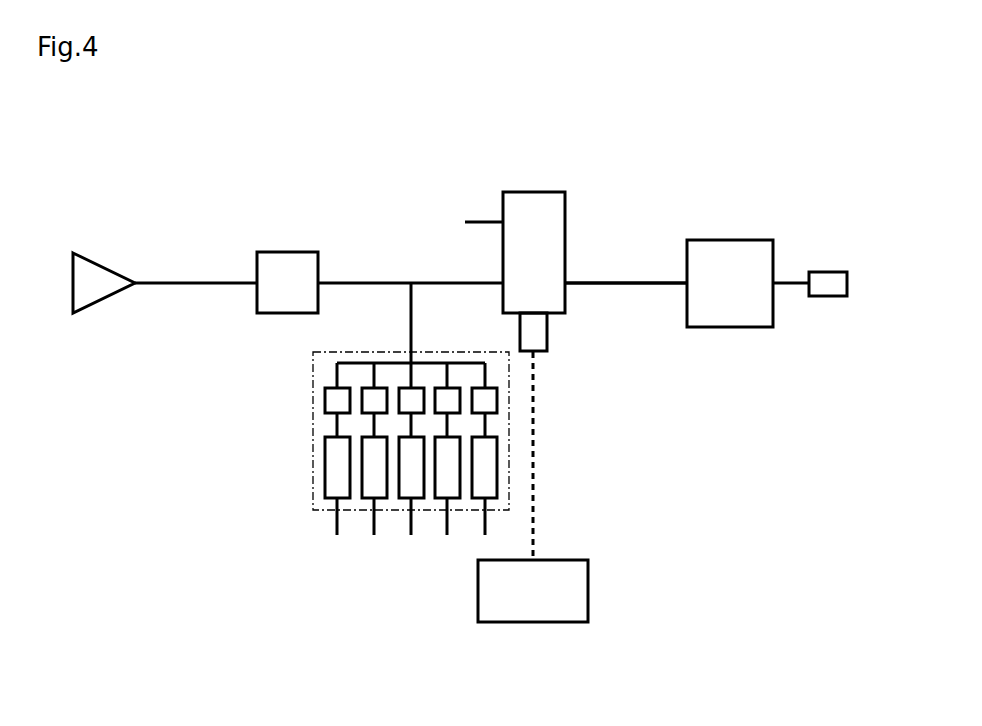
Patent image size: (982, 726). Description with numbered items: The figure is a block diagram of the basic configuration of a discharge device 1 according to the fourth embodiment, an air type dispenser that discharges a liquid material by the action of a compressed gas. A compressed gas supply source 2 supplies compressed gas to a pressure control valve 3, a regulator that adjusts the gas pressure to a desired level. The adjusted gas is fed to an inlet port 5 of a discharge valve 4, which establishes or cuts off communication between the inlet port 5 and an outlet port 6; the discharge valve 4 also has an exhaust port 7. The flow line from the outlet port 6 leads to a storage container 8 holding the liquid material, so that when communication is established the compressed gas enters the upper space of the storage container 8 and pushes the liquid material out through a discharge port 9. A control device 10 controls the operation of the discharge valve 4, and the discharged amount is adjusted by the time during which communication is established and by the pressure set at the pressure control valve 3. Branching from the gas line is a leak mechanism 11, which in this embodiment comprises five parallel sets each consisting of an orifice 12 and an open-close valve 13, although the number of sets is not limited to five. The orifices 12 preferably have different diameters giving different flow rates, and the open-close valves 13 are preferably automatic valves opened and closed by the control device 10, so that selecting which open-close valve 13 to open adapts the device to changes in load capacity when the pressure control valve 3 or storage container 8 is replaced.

The discharge device 1 is at (747, 492).
The compressed gas supply source 2 is at (105, 265).
The pressure control valve 3 is at (287, 252).
The discharge valve 4 is at (533, 190).
The inlet port 5 is at (502, 287).
The outlet port 6 is at (565, 281).
The exhaust port 7 is at (503, 218).
The storage container 8 is at (730, 240).
The discharge port 9 is at (828, 272).
The control device 10 is at (588, 588).
The leak mechanism 11 is at (334, 443).
The orifice 12 is at (325, 400).
The open-close valve 13 is at (347, 483).